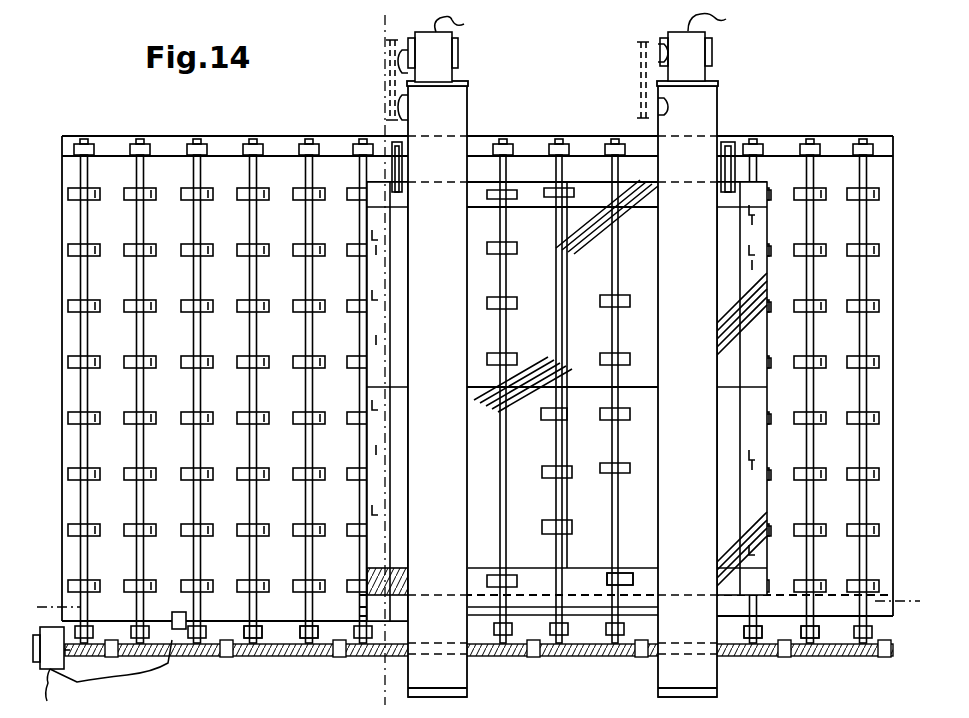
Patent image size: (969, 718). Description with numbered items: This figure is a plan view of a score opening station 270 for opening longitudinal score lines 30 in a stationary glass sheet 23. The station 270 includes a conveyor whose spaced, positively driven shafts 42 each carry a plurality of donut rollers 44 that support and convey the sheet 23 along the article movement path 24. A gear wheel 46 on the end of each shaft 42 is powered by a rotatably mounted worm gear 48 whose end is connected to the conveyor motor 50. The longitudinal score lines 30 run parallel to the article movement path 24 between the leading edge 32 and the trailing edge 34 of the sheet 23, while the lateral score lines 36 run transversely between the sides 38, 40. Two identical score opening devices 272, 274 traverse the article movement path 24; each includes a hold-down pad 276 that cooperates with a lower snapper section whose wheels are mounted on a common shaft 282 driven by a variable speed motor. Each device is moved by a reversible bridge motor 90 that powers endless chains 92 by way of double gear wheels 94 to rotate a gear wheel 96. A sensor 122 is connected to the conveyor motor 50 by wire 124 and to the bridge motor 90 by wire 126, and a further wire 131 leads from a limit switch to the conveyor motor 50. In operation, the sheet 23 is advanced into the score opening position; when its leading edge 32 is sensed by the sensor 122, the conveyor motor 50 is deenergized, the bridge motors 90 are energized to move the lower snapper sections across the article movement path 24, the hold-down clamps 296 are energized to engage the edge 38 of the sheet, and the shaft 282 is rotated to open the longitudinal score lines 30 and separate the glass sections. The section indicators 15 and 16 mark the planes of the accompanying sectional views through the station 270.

The section line 15- 15 is at (410, 22).
The section line 16- 16 is at (48, 616).
The sheet 23 is at (780, 278).
The article movement path 24 is at (874, 386).
The longitudinal score lines 30 is at (641, 210).
The leading edge 32 is at (366, 398).
The trailing edge 34 is at (788, 445).
The lateral score lines 36 is at (390, 327).
The side 38 is at (532, 188).
The side 40 is at (585, 598).
The shafts 42 is at (144, 458).
The donut rollers 44 is at (127, 417).
The gear wheel 46 is at (313, 650).
The worm gear 48 is at (350, 657).
The conveyor motor 50 is at (61, 656).
The bridge motor 90 is at (445, 58).
The endless chains 92 is at (402, 93).
The double gear wheels 94 is at (642, 46).
The gear wheel 96 is at (398, 120).
The sensor 122 is at (180, 610).
The wire 124 is at (118, 675).
The wire 126 is at (463, 30).
The wire 131 is at (47, 701).
The score opening station 270 is at (782, 102).
The score opening device 272 is at (734, 90).
The score opening device 274 is at (484, 110).
The hold-down pad 276 is at (472, 673).
The common shaft 282 is at (535, 608).
The hold-down clamps 296 is at (395, 172).